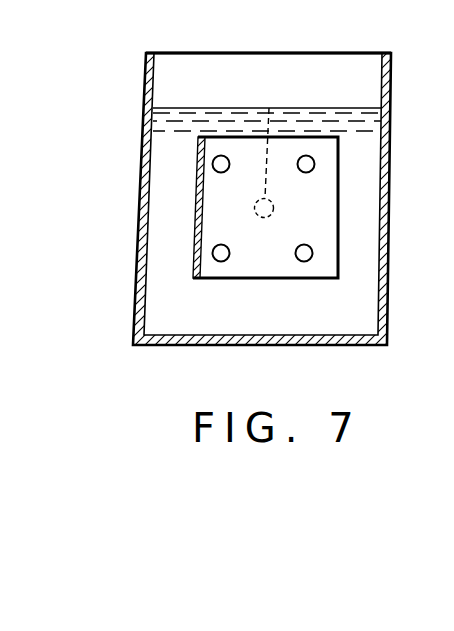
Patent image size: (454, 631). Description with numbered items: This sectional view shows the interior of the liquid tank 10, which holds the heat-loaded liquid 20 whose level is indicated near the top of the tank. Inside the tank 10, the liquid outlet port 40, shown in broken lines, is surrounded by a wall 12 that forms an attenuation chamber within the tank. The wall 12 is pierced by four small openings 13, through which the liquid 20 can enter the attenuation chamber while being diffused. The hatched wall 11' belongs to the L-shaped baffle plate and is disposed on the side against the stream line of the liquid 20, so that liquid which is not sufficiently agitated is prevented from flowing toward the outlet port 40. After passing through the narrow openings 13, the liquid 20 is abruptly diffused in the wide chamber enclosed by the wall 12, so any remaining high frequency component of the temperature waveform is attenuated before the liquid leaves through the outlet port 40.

The liquid tank 10 is at (388, 141).
The liquid 20 is at (362, 308).
The wall 11' is at (180, 214).
The wall 12 is at (325, 218).
The small openings 13 is at (220, 160).
The outlet port 40 is at (269, 108).